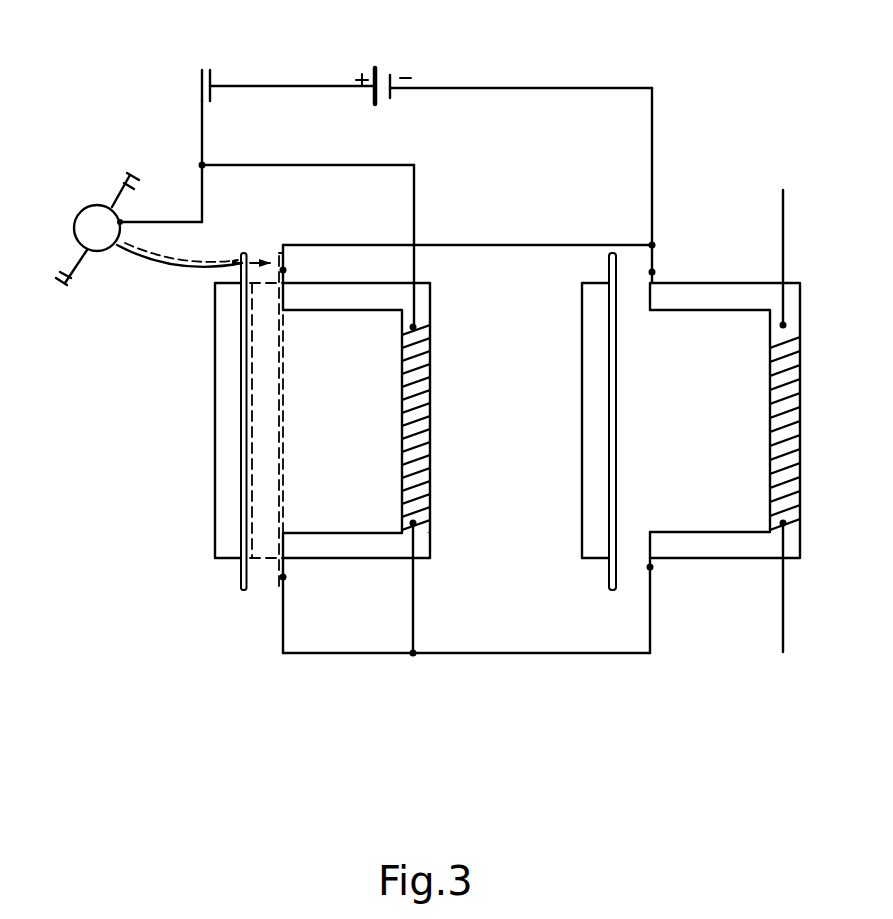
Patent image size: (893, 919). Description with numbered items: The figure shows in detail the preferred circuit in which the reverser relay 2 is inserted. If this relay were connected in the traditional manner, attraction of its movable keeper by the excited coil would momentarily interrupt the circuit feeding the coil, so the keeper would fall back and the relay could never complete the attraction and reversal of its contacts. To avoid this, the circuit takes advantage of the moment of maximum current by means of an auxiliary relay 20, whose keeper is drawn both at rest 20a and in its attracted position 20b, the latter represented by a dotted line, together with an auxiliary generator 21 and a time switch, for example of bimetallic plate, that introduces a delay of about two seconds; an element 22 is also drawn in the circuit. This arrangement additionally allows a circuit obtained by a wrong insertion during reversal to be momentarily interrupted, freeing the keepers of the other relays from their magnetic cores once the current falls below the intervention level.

The reverser relay 2 is at (764, 400).
The auxiliary relay 20 is at (398, 398).
The keeper at rest 20a is at (212, 403).
The keeper attracted 20b is at (268, 560).
The auxiliary generator 21 is at (388, 62).
The capacitor 22 is at (192, 62).